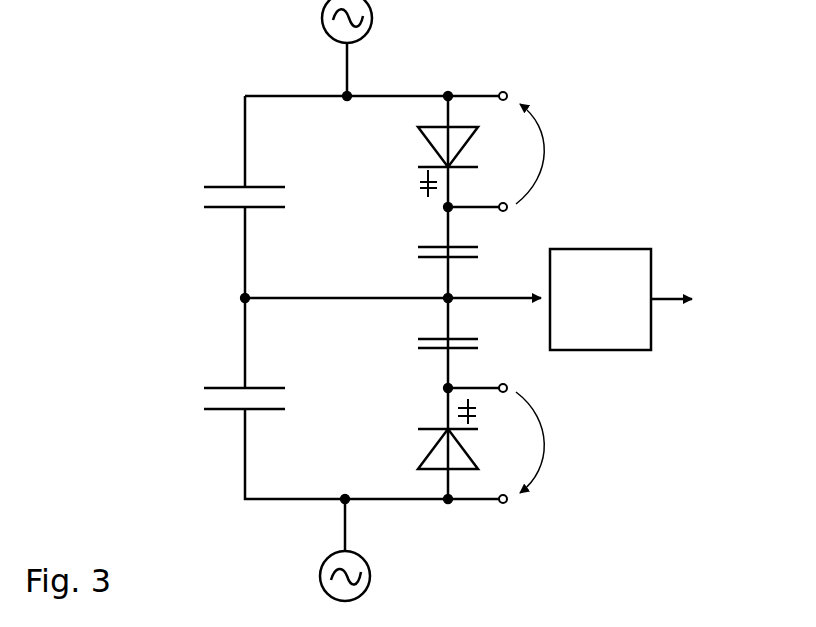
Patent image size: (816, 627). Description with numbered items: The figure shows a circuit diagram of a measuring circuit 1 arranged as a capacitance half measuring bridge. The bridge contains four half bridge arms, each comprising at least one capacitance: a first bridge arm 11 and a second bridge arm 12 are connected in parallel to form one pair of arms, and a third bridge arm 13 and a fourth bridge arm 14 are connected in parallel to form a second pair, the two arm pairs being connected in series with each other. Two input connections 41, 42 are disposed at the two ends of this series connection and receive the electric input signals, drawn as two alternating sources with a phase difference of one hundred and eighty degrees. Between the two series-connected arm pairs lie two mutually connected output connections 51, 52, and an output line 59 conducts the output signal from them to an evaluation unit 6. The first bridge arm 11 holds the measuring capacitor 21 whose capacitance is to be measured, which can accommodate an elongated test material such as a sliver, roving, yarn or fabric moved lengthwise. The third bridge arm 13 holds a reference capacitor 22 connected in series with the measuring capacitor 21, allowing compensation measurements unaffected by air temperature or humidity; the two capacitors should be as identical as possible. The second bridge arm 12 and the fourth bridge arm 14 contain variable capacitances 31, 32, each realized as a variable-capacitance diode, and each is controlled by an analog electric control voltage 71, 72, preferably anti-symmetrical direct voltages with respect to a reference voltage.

The measuring circuit 1 is at (614, 108).
The evaluation unit 6 is at (598, 248).
The first bridge arm 11 is at (158, 198).
The second bridge arm 12 is at (668, 196).
The third bridge arm 13 is at (158, 403).
The fourth bridge arm 14 is at (668, 402).
The measuring capacitor 21 is at (273, 184).
The reference capacitor 22 is at (262, 411).
The variable capacitance 31 is at (423, 168).
The variable capacitance 32 is at (428, 428).
The input connection 41 is at (347, 101).
The input connection 42 is at (345, 495).
The output connection 51 is at (238, 298).
The output connection 52 is at (444, 294).
The output line 59 is at (512, 303).
The electric control voltage 71 is at (545, 150).
The electric control voltage 72 is at (545, 445).